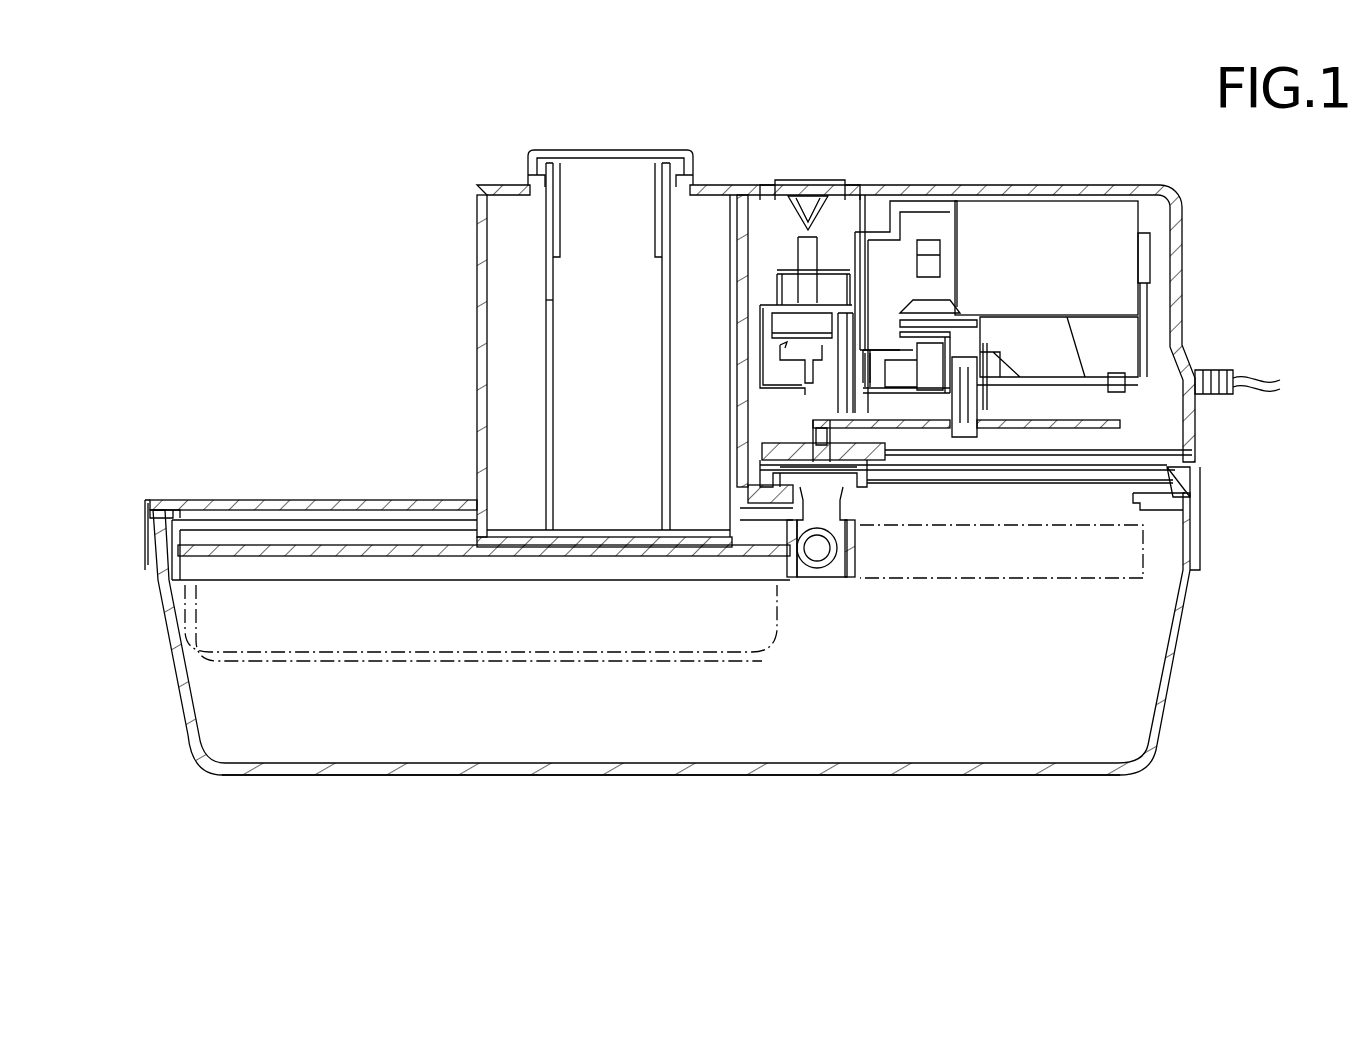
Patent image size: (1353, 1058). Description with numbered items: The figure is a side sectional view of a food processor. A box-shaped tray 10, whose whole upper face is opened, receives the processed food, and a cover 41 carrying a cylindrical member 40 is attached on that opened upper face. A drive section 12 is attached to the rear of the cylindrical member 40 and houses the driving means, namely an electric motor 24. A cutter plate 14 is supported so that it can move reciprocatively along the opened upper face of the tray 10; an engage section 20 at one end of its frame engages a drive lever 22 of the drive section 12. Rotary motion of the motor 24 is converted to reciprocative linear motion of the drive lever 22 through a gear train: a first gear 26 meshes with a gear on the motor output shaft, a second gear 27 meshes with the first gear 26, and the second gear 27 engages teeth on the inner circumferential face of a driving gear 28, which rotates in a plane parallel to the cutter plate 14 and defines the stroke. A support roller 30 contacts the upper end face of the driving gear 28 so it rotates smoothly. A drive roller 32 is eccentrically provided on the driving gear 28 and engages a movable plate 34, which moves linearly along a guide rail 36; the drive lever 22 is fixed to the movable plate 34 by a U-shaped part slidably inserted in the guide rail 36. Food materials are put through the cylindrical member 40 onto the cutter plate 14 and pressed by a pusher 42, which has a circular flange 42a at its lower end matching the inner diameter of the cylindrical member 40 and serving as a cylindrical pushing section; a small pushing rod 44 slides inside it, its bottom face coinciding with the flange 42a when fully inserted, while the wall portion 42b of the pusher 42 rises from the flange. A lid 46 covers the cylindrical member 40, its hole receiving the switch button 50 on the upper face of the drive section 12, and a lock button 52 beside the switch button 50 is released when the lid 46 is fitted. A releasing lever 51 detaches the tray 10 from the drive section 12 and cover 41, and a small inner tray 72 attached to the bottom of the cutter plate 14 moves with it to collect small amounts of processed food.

The tray 10 is at (467, 775).
The drive section 12 is at (936, 184).
The cutter plate 14 is at (245, 565).
The engage section 20 is at (835, 580).
The drive lever 22 is at (840, 545).
The electric motor 24 is at (1062, 205).
The first gear 26 is at (940, 300).
The second gear 27 is at (985, 360).
The driving gear 28 is at (1130, 400).
The support roller 30 is at (1120, 397).
The drive roller 32 is at (1185, 455).
The movable plate 34 is at (885, 470).
The guide rail 36 is at (1185, 490).
The cylindrical member 40 is at (478, 345).
The cover 41 is at (262, 500).
The pusher 42 is at (560, 255).
The circular flange 42a is at (520, 522).
The cylinder wall 42b is at (548, 302).
The pushing rod 44 is at (624, 150).
The lid 46 is at (515, 185).
The switch button 50 is at (812, 185).
The releasing lever 51 is at (1190, 545).
The lock button 52 is at (752, 180).
The inner tray 72 is at (245, 660).